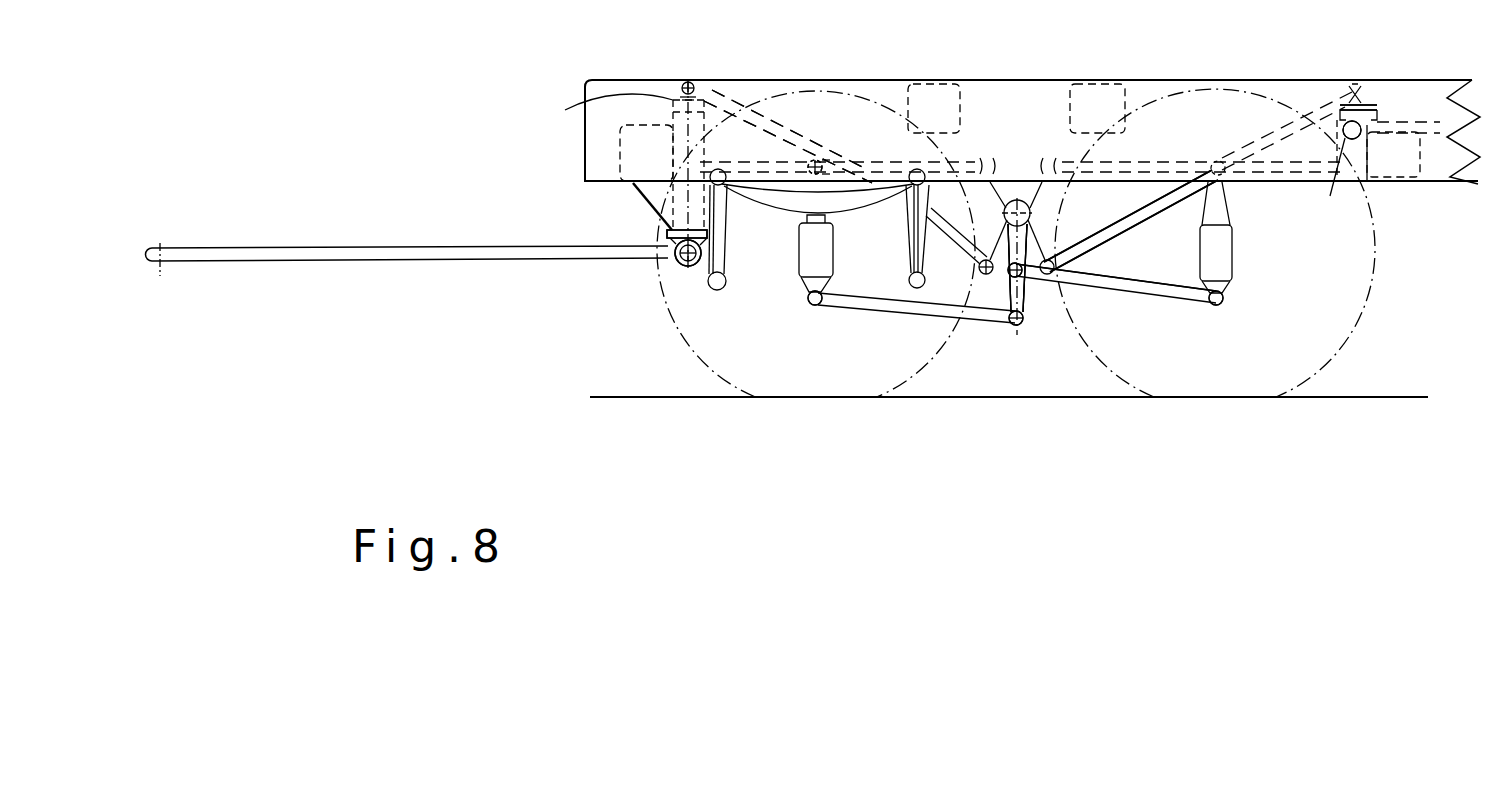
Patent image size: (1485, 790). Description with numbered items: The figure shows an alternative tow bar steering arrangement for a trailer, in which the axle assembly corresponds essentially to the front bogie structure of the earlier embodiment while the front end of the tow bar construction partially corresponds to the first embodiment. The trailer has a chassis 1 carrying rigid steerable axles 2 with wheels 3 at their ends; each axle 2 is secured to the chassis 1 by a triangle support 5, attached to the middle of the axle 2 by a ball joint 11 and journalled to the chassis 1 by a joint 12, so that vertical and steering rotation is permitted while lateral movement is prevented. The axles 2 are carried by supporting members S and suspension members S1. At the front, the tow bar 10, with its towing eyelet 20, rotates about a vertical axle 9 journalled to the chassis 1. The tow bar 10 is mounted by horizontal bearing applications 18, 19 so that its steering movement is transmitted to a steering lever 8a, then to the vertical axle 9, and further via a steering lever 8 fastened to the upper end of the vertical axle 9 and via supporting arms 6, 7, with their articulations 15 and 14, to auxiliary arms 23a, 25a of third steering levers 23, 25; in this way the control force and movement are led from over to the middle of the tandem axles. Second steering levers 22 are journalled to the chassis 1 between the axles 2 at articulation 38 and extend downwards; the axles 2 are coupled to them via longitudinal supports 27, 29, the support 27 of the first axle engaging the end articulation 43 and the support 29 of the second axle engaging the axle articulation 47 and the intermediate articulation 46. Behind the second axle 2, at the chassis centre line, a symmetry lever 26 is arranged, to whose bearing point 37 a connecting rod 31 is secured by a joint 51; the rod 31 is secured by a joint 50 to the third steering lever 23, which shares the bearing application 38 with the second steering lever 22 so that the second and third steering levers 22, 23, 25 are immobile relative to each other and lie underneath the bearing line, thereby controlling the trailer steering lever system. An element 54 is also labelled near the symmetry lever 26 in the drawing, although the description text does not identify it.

The chassis 1 is at (1445, 184).
The axle 2 is at (806, 250).
The wheel 3 is at (720, 383).
The triangle support 5 is at (876, 162).
The supporting arm 6 is at (780, 96).
The supporting arm 7 is at (788, 136).
The steering lever 8 is at (596, 95).
The steering lever 8a is at (621, 235).
The vertical axle 9 is at (630, 206).
The tow bar 10 is at (407, 234).
The ball joint 11 is at (812, 160).
The joint 12 is at (990, 160).
The articulation 14 is at (818, 305).
The articulation 15 is at (674, 155).
The bearing 18 is at (620, 266).
The bearing 19 is at (688, 253).
The towing eyelet 20 is at (194, 239).
The second steering lever 22 is at (1009, 258).
The third steering lever 23 is at (1050, 245).
The third steering lever 25 is at (1131, 221).
The auxiliary arm 23a is at (978, 280).
The auxiliary arm 25a is at (1017, 268).
The symmetry lever 26 is at (1363, 105).
The longitudinal support 27 is at (924, 316).
The longitudinal support 29 is at (1152, 300).
The connecting rod 31 is at (1272, 135).
The bearing point 37 is at (1360, 142).
The articulation 38 is at (1006, 194).
The steering lever articulation 43 is at (1020, 327).
The steering lever articulation 46 is at (1027, 297).
The axle articulation 47 is at (1222, 305).
The joint 50 is at (1118, 254).
The joint 51 is at (1357, 84).
The line 54 is at (1326, 180).
The supporting member S is at (825, 190).
The suspension member S1 is at (728, 260).